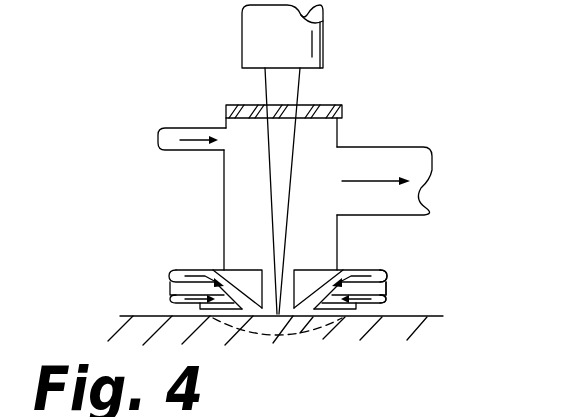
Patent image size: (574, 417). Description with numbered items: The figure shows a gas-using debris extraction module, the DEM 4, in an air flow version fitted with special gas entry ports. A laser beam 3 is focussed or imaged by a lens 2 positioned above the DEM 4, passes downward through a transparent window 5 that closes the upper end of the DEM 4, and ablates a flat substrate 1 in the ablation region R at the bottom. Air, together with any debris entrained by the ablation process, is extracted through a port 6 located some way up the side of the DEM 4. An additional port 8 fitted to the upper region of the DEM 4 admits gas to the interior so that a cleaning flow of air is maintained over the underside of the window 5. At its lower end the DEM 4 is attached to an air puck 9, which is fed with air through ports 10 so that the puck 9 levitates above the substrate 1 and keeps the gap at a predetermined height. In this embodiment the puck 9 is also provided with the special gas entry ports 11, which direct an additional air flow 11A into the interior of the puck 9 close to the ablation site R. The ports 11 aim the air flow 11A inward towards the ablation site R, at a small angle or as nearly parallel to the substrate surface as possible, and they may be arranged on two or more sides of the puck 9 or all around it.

The substrate 1 is at (412, 318).
The lens 2 is at (325, 42).
The laser beam 3 is at (300, 91).
The DEM 4 is at (223, 230).
The transparent window 5 is at (348, 115).
The port 6 is at (427, 163).
The additional port 8 is at (175, 128).
The air puck 9 is at (230, 272).
The ports 10 is at (386, 293).
The gas entry ports 11 is at (386, 274).
The additional air flow 11A is at (381, 271).
The ablation site R is at (320, 336).